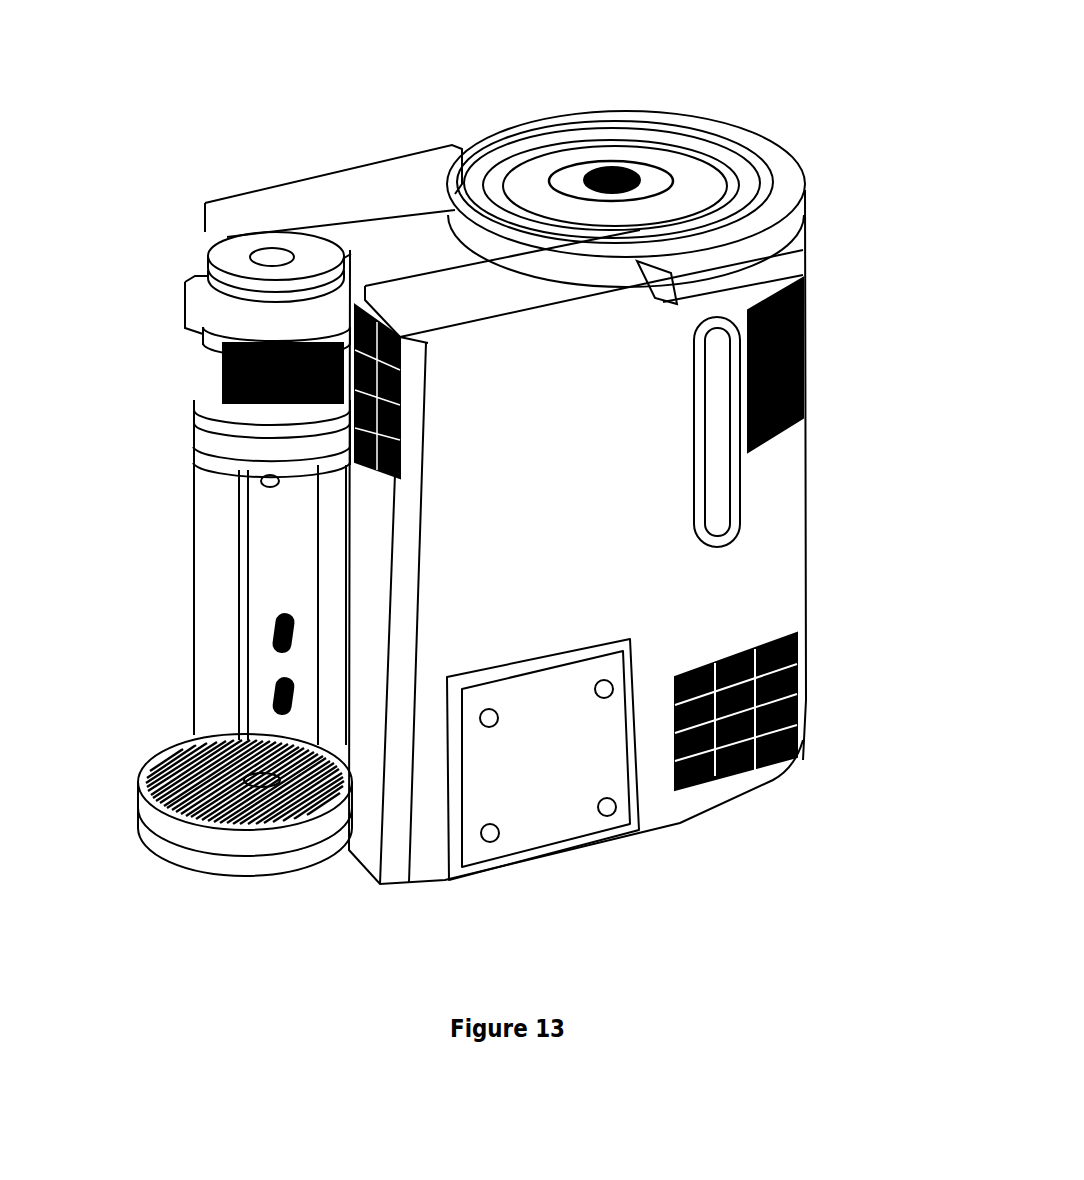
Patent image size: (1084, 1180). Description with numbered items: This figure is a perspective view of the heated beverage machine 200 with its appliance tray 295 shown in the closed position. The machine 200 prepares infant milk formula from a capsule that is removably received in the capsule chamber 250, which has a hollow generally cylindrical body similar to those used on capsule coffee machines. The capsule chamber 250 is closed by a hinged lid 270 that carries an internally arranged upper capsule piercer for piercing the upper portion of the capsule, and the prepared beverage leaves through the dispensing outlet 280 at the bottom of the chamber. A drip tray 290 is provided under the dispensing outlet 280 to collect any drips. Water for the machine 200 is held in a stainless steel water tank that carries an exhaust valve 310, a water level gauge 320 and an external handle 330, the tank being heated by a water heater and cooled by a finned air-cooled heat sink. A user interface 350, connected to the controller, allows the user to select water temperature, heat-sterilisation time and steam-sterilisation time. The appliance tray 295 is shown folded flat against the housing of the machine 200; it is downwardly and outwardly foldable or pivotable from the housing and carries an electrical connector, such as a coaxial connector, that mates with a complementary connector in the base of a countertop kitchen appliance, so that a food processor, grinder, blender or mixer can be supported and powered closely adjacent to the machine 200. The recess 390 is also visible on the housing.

The heated beverage machine 200 is at (494, 477).
The capsule chamber 250 is at (222, 402).
The hinged lid 270 is at (208, 250).
The dispensing outlet 280 is at (265, 484).
The drip tray 290 is at (228, 848).
The appliance tray 295 is at (571, 755).
The exhaust valve 310 is at (626, 148).
The water level gauge 320 is at (632, 567).
The external handle 330 is at (574, 452).
The user interface 350 is at (405, 420).
The handle recess 390 is at (717, 539).